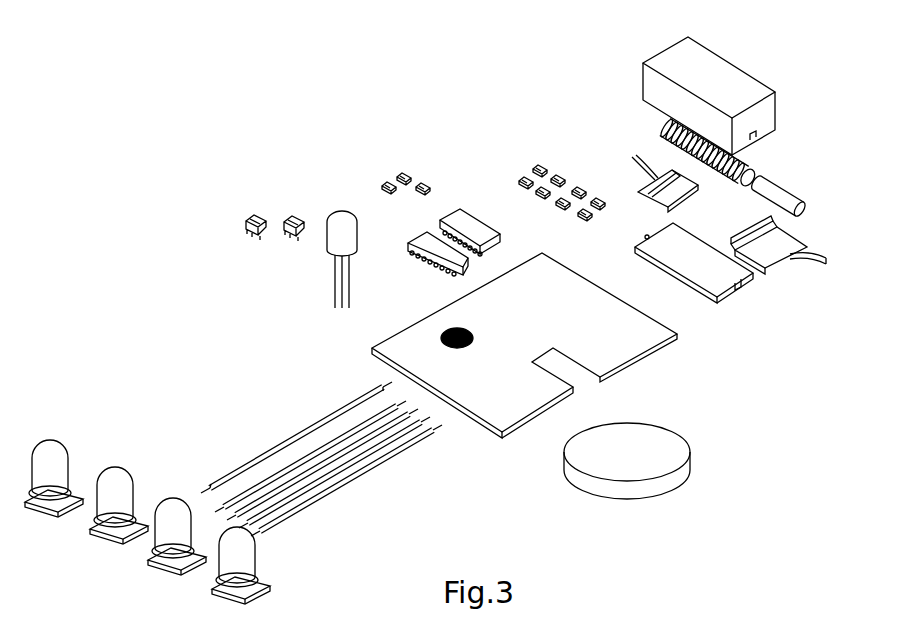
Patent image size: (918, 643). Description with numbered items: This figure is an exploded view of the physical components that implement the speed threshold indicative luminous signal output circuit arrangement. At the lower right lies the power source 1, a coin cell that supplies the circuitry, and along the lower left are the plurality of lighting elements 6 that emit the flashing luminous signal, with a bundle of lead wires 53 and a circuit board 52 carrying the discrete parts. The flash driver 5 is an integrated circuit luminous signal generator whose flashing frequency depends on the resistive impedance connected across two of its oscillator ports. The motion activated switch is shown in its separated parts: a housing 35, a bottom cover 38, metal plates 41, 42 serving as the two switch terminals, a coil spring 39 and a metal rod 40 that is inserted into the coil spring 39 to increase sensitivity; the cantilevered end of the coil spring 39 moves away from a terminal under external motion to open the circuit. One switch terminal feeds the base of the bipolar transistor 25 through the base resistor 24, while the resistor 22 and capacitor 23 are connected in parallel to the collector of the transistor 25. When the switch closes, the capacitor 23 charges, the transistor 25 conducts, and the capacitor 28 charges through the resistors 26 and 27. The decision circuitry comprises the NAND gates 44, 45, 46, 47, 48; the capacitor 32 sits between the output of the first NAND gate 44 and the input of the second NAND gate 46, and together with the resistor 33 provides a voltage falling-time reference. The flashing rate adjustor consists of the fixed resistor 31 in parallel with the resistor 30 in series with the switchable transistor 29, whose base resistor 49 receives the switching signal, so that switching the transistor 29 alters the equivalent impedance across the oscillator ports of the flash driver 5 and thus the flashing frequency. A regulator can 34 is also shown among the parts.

The power source 1 is at (650, 462).
The flash driver 5 is at (441, 336).
The lighting elements 6 is at (242, 555).
The resistor 22 is at (524, 186).
The capacitor 23 is at (403, 174).
The base resistor 24 is at (537, 166).
The bipolar transistor 25 is at (293, 215).
The resistor 26 is at (542, 196).
The resistor 27 is at (564, 207).
The capacitor 28 is at (424, 184).
The switchable transistor 29 is at (252, 213).
The resistor 30 is at (579, 188).
The fixed resistor 31 is at (599, 199).
The capacitor 32 is at (383, 183).
The resistor 33 is at (587, 218).
The voltage regulator 34 is at (342, 240).
The housing 35 is at (722, 73).
The bottom cover 38 is at (700, 260).
The coil spring 39 is at (665, 127).
The metal rod 40 is at (773, 195).
The metal plate 41 is at (790, 258).
The metal plate 42 is at (665, 190).
The first NAND gate 44 is at (463, 222).
The NAND gate 45 is at (475, 232).
The second NAND gate 46 is at (483, 237).
The NAND gate 47 is at (410, 255).
The NAND gate 48 is at (447, 266).
The base resistor 49 is at (556, 176).
The circuit board 52 is at (503, 383).
The lead wires 53 is at (267, 450).